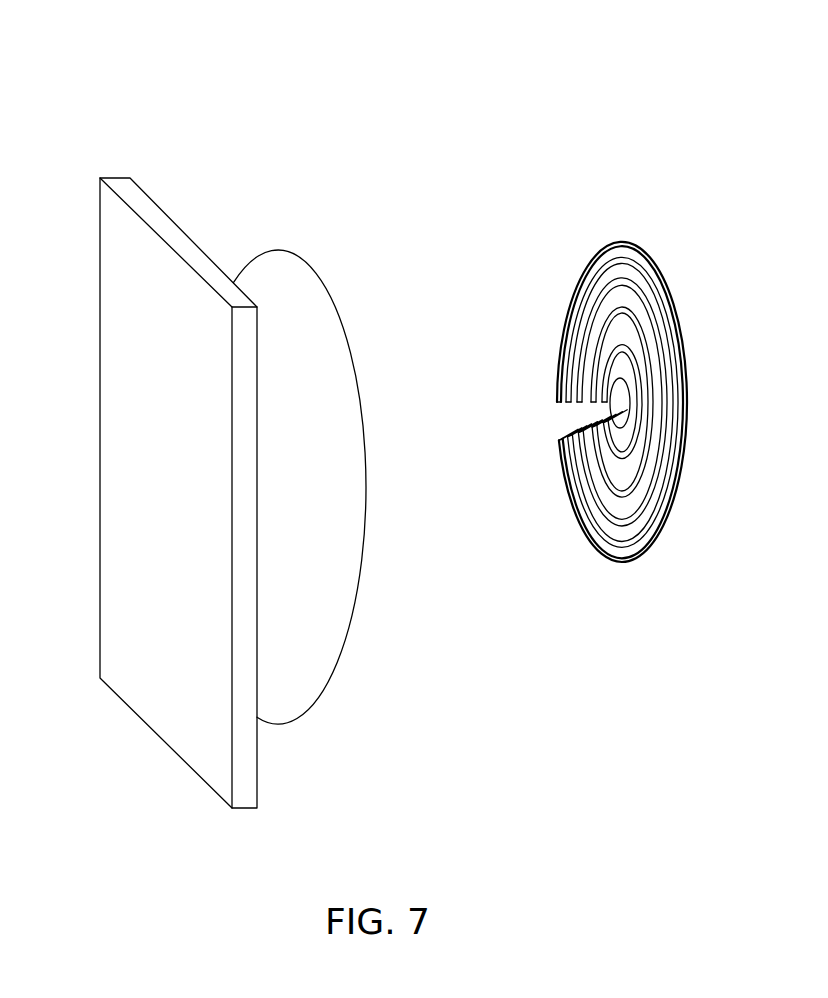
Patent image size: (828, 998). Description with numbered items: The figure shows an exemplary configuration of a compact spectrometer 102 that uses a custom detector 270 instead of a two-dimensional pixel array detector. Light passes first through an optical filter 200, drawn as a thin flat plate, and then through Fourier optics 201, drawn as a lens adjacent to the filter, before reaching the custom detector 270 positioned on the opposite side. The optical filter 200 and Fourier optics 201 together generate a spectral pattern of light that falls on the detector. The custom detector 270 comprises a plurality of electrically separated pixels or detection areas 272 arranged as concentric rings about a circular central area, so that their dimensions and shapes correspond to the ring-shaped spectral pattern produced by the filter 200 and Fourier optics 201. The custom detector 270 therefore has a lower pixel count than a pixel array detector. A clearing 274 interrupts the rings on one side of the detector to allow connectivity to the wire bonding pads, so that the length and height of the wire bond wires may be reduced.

The compact spectrometer 102 is at (350, 70).
The optical filter 200 is at (128, 178).
The Fourier optics 201 is at (282, 250).
The custom detector 270 is at (622, 242).
The detection areas 272 is at (655, 493).
The clearing 274 is at (567, 413).